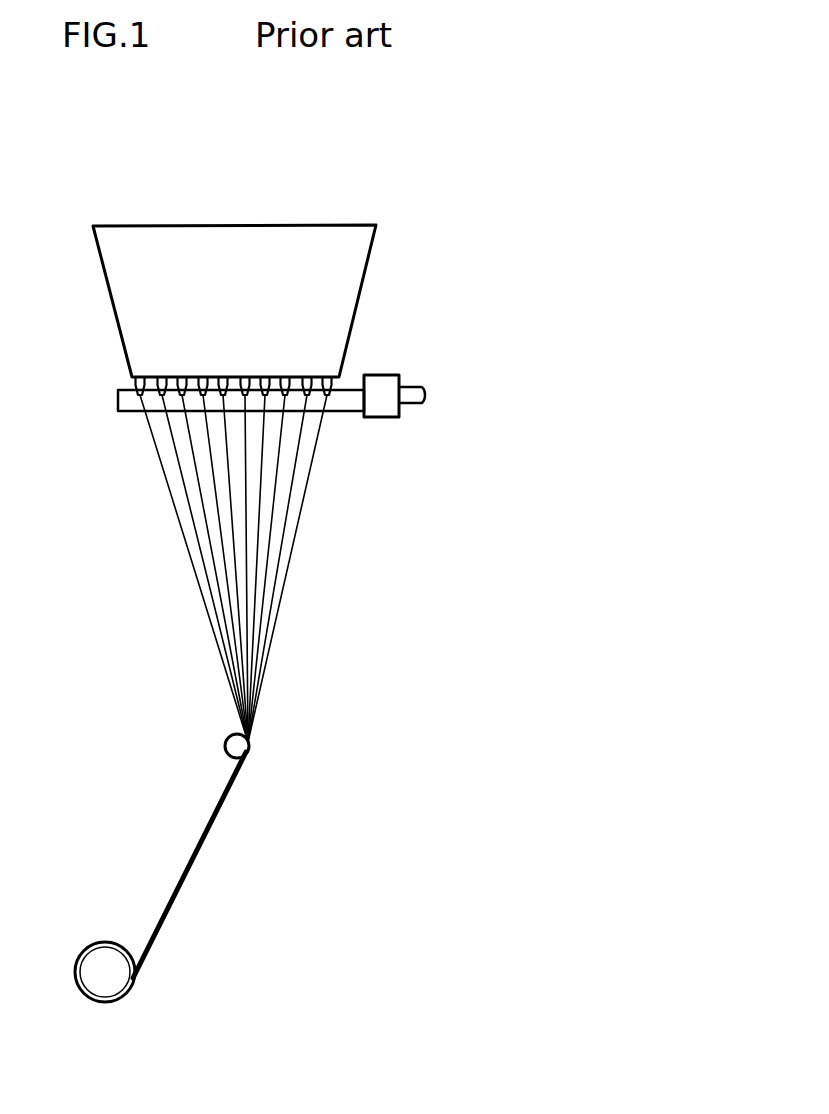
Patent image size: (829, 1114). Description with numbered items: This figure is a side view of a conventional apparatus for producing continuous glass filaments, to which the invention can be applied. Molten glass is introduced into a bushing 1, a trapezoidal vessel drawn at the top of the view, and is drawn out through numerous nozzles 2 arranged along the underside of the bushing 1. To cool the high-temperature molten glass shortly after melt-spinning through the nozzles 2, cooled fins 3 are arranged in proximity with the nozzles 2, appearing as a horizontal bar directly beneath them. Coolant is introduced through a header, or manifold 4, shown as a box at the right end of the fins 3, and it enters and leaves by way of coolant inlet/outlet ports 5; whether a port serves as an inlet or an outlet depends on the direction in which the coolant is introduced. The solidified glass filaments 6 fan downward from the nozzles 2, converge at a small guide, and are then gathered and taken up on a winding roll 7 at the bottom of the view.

The bushing 1 is at (348, 280).
The nozzles 2 is at (118, 391).
The cooled fins 3 is at (118, 405).
The header (manifold) 4 is at (383, 410).
The coolant inlet/outlet ports 5 is at (410, 387).
The glass filaments 6 is at (273, 610).
The winding roll 7 is at (95, 968).